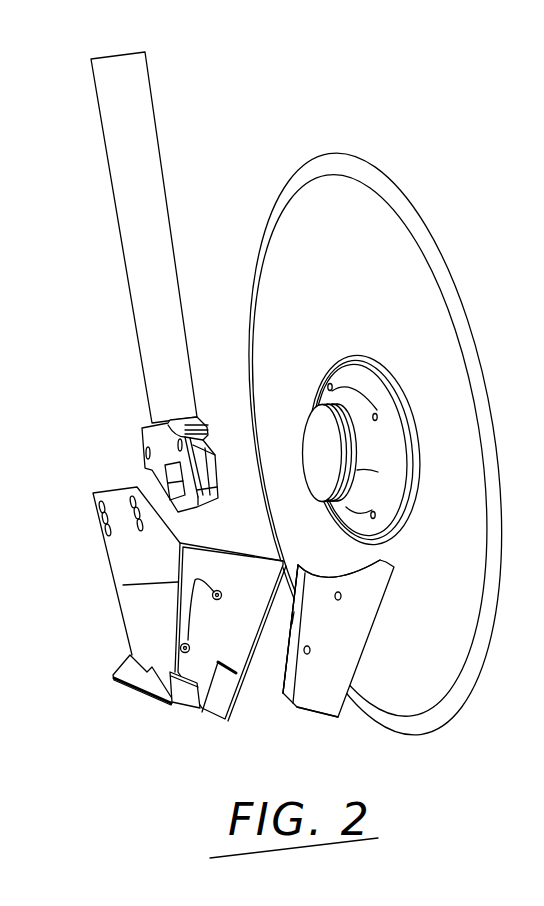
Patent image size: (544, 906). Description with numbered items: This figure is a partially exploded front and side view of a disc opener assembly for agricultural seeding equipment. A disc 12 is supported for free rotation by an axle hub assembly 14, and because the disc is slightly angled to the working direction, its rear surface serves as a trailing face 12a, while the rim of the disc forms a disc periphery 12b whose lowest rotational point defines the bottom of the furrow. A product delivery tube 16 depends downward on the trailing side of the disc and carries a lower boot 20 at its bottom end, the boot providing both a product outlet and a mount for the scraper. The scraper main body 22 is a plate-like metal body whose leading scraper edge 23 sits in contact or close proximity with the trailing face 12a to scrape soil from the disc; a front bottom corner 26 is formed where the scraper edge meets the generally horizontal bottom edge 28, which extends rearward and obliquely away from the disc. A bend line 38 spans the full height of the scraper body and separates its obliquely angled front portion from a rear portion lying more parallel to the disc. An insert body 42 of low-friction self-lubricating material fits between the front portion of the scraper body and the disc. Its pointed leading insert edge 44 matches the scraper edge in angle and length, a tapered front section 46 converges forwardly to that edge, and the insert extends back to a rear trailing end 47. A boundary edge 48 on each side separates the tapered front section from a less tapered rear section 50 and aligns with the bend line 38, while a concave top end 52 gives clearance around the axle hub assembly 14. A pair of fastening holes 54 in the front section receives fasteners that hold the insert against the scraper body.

The disc 12 is at (375, 444).
The trailing face 12a is at (287, 260).
The disc periphery 12b is at (457, 277).
The axle hub assembly 14 is at (310, 427).
The product delivery tube 16 is at (150, 143).
The lower boot 20 is at (204, 405).
The scraper main body 22 is at (169, 632).
The leading scraper edge 23 is at (237, 673).
The front bottom corner 26 is at (223, 722).
The bottom edge 28 is at (197, 712).
The bend line 38 is at (176, 600).
The insert body 42 is at (351, 644).
The leading insert edge 44 is at (372, 630).
The front section 46 is at (329, 705).
The rear trailing end 47 is at (288, 653).
The boundary edge 48 is at (299, 703).
The rear section 50 is at (297, 618).
The top end 52 is at (328, 572).
The fastening holes 54 is at (337, 600).